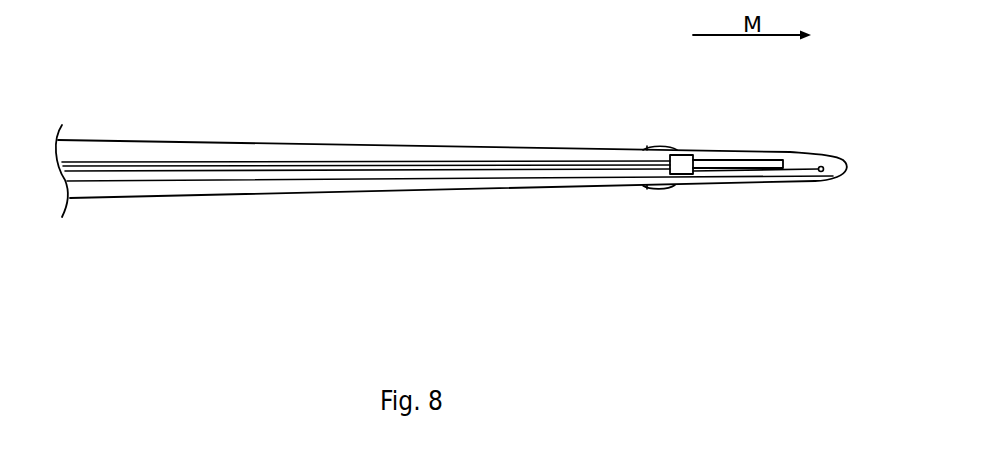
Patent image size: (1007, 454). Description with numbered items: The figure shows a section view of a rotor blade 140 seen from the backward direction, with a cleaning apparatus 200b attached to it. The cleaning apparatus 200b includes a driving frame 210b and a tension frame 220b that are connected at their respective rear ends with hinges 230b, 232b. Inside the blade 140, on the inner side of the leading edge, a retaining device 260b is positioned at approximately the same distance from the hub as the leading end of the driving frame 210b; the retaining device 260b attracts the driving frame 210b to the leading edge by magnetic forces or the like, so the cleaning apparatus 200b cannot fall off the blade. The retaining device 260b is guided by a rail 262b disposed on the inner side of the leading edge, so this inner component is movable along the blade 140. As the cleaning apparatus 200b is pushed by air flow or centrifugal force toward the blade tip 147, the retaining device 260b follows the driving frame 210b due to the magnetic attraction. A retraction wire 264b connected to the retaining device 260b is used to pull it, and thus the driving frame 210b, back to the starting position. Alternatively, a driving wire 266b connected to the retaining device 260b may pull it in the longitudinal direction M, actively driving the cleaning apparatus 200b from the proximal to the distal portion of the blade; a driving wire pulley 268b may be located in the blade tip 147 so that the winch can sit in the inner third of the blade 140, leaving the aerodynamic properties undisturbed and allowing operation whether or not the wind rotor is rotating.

The rotor blade 140 is at (485, 143).
The blade tip 147 is at (824, 160).
The cleaning apparatus 200b is at (667, 160).
The driving frame 210b is at (671, 146).
The tension frame 220b is at (648, 147).
The hinge 230b is at (668, 146).
The hinge 232b is at (655, 187).
The retaining device 260b is at (695, 185).
The rail 262b is at (358, 162).
The retraction wire 264b is at (237, 162).
The driving wire 266b is at (803, 153).
The driving wire pulley 268b is at (823, 173).